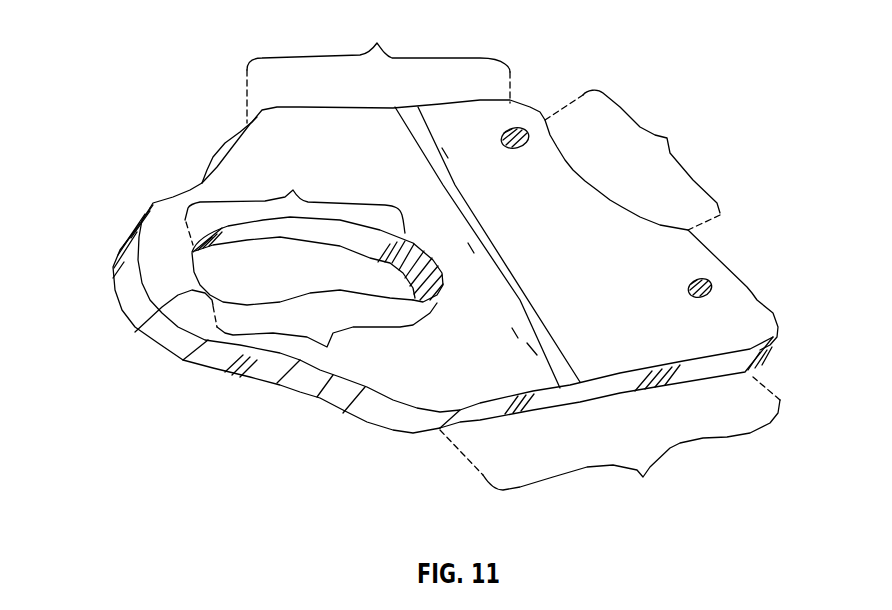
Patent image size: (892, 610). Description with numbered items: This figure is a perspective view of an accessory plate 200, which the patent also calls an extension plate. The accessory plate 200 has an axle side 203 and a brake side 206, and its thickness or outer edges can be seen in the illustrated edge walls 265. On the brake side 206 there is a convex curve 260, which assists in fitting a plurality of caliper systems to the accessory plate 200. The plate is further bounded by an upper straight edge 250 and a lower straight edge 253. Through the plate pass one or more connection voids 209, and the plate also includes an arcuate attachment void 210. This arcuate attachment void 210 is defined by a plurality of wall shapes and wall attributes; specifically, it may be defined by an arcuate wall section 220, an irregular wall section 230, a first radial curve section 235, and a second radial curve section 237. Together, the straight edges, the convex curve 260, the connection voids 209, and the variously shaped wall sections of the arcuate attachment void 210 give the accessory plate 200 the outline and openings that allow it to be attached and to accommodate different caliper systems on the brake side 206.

The accessory plate 200 is at (537, 240).
The axle side 203 is at (133, 399).
The brake side 206 is at (728, 230).
The connection voids 209 is at (501, 133).
The arcuate attachment void 210 is at (275, 292).
The arcuate wall section 220 is at (296, 188).
The irregular wall section 230 is at (312, 393).
The first radial curve section 235 is at (442, 298).
The second radial curve section 237 is at (135, 332).
The upper straight edge 250 is at (777, 332).
The lower straight edge 253 is at (378, 68).
The convex curve 260 is at (667, 138).
The edge walls 265 is at (612, 390).